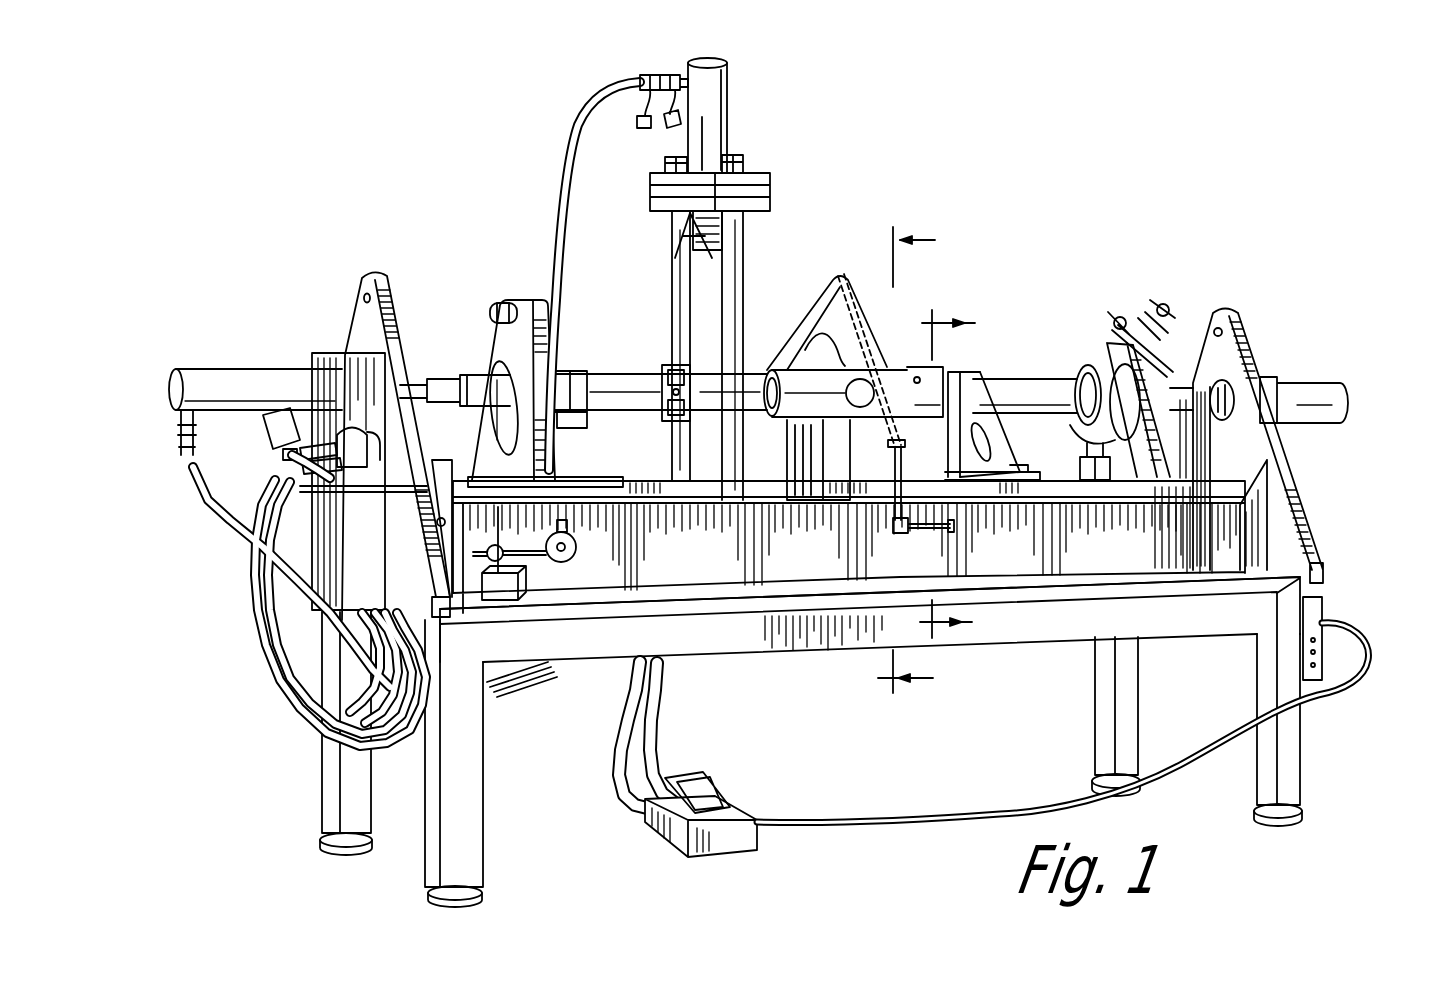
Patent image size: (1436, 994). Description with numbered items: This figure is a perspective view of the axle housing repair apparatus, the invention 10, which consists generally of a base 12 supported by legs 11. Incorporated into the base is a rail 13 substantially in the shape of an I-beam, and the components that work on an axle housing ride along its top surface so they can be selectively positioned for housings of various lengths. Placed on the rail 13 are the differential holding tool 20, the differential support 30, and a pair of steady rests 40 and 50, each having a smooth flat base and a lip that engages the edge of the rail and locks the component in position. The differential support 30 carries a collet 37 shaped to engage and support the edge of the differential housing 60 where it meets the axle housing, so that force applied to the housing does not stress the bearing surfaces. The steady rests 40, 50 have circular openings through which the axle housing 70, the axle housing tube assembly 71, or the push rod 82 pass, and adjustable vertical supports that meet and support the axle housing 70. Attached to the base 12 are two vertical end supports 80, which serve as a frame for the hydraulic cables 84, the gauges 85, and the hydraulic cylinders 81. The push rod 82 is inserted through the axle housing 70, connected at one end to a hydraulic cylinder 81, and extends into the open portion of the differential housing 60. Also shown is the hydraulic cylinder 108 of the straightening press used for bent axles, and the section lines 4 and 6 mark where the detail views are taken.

The invention 10 is at (1286, 232).
The legs 11 is at (470, 800).
The base 12 is at (1263, 613).
The rail 13 is at (1187, 540).
The differential holding tool 20 is at (764, 370).
The differential support 30 is at (993, 372).
The collet 37 is at (967, 385).
The steady rest 40 is at (1173, 373).
The steady rest 50 is at (502, 353).
The differential housing 60 is at (857, 343).
The axle housing 70 is at (622, 376).
The axle housing tube assembly 71 is at (1043, 387).
The vertical end supports 80 is at (367, 290).
The hydraulic cylinder 81 is at (218, 369).
The push rod 82 is at (437, 379).
The hydraulic cables 84 is at (255, 587).
The gauges 85 is at (267, 433).
The hydraulic cylinder 108 is at (727, 110).
The section line 4- 4 is at (919, 461).
The section line 6- 6 is at (958, 474).